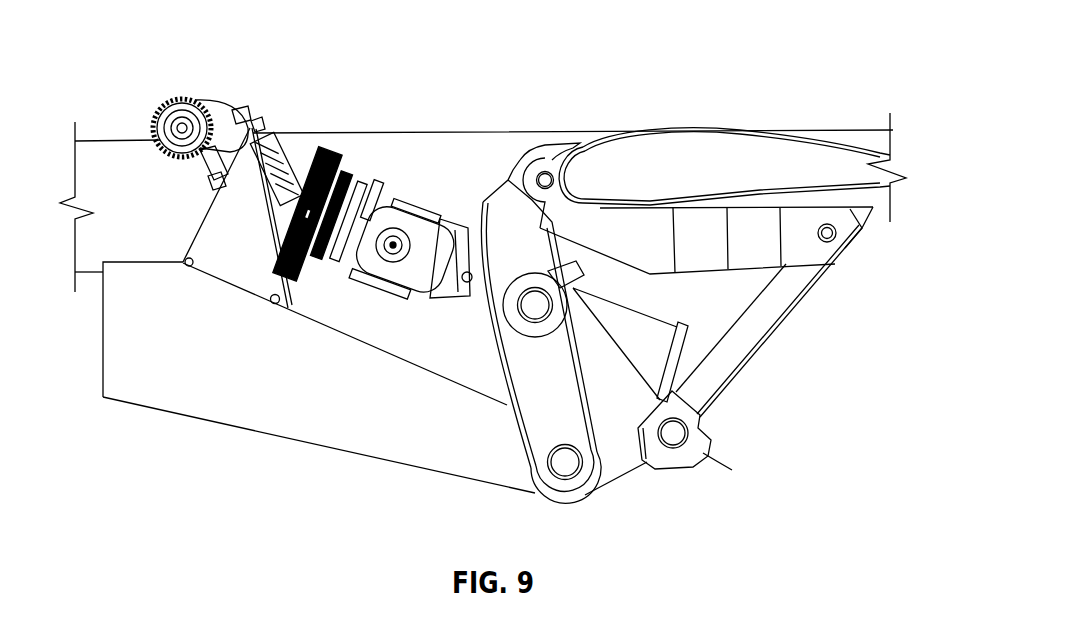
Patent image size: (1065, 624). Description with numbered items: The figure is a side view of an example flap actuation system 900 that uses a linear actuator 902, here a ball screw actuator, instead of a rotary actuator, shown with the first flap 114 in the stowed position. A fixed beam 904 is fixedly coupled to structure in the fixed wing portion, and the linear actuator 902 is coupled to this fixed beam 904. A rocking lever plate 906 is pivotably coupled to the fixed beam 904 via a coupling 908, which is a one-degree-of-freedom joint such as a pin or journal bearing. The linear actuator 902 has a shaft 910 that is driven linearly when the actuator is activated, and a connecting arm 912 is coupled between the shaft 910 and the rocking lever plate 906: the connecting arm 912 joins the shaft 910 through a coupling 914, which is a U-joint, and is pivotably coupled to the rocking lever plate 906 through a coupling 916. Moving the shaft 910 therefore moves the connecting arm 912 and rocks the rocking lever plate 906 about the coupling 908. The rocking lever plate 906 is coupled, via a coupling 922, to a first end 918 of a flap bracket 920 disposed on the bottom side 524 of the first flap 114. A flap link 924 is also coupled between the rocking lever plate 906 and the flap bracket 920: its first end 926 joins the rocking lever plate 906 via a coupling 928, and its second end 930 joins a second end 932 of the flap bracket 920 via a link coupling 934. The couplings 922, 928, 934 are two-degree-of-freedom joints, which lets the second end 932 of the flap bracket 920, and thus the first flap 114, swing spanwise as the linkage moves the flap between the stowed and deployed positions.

The flap actuation system 900 is at (113, 44).
The linear actuator 902 is at (312, 170).
The fixed beam 904 is at (185, 387).
The rocking lever plate 906 is at (530, 404).
The coupling 908 is at (566, 465).
The shaft 910 is at (393, 243).
The connecting arm 912 is at (479, 199).
The coupling 914 is at (414, 218).
The coupling 916 is at (519, 306).
The first end 918 is at (520, 158).
The flap bracket 920 is at (618, 227).
The coupling 922 is at (546, 178).
The first flap 114 is at (748, 153).
The bottom side 524 is at (860, 226).
The second end 932 is at (851, 239).
The link coupling 934 is at (830, 240).
The second end 930 is at (800, 273).
The flap link 924 is at (721, 363).
The first end 926 is at (708, 448).
The coupling 928 is at (673, 436).